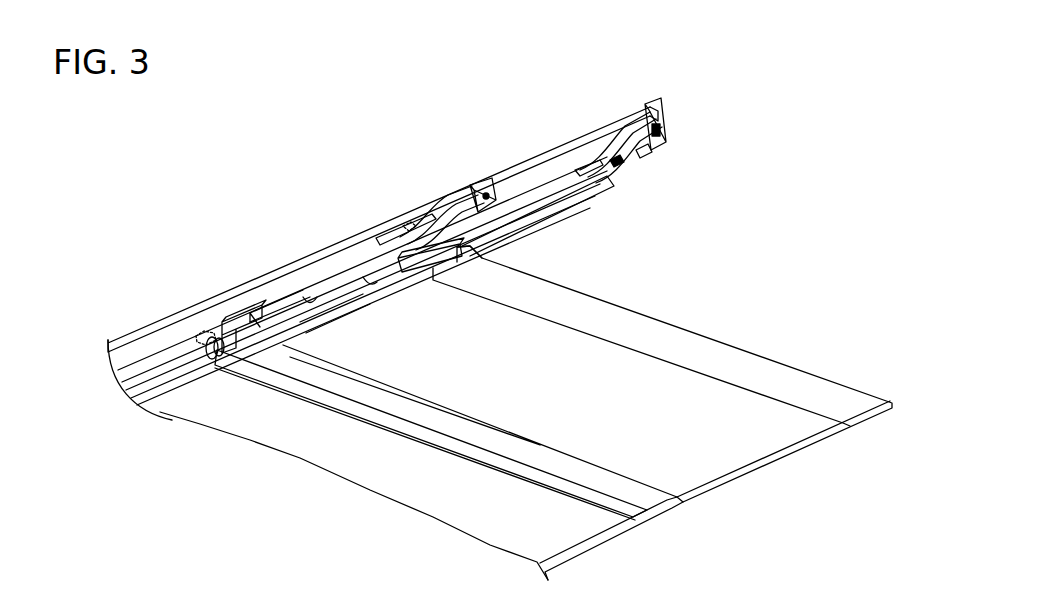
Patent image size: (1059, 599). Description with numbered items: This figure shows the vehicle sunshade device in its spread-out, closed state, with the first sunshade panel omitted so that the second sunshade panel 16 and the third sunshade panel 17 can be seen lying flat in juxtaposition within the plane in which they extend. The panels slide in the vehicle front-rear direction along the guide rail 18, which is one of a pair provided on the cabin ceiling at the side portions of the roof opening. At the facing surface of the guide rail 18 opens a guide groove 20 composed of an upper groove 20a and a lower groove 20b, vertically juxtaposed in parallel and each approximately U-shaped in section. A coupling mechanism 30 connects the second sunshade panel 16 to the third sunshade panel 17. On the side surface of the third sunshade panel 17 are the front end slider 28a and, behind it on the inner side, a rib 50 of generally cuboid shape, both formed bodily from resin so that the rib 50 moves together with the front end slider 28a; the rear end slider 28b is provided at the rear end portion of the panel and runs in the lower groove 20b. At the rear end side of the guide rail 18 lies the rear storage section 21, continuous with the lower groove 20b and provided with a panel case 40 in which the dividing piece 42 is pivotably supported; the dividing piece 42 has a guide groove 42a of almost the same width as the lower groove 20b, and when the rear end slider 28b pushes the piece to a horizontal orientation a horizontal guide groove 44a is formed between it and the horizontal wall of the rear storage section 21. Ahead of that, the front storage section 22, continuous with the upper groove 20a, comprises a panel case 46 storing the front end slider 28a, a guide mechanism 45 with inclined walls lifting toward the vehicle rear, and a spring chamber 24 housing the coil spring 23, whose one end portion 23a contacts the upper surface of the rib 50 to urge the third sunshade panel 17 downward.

The second sunshade panel 16 is at (300, 440).
The third sunshade panel 17 is at (617, 403).
The guide rail 18 is at (137, 363).
The guide groove 20 is at (313, 242).
The upper groove 20a is at (320, 297).
The lower groove 20b is at (377, 280).
The rear storage section 21 is at (648, 115).
The front storage section 22 is at (382, 158).
The coil spring 23 is at (506, 267).
The one end portion of the coil spring 23a is at (497, 234).
The spring chamber 24 is at (485, 183).
The front end slider 28a is at (197, 330).
The rear end slider 28b is at (405, 225).
The coupling mechanism 30 is at (203, 380).
The panel case 40 is at (660, 115).
The dividing piece 42 is at (650, 147).
The guide groove of the dividing piece 42a is at (643, 156).
The horizontal guide groove 44a is at (618, 165).
The guide mechanism 45 is at (414, 199).
The panel case 46 is at (420, 196).
The rib 50 is at (233, 322).